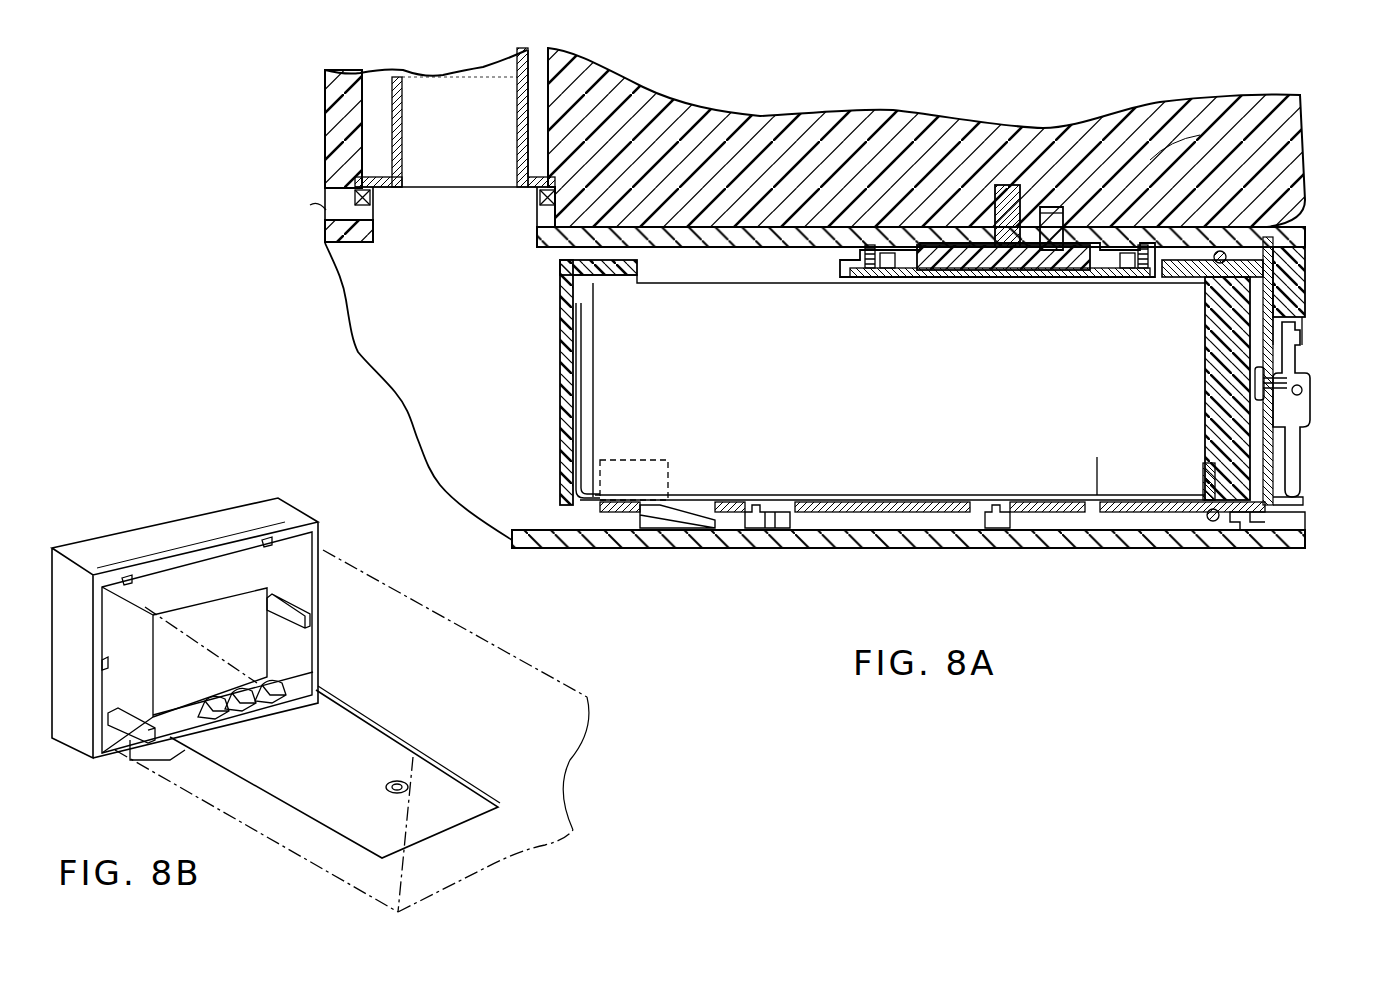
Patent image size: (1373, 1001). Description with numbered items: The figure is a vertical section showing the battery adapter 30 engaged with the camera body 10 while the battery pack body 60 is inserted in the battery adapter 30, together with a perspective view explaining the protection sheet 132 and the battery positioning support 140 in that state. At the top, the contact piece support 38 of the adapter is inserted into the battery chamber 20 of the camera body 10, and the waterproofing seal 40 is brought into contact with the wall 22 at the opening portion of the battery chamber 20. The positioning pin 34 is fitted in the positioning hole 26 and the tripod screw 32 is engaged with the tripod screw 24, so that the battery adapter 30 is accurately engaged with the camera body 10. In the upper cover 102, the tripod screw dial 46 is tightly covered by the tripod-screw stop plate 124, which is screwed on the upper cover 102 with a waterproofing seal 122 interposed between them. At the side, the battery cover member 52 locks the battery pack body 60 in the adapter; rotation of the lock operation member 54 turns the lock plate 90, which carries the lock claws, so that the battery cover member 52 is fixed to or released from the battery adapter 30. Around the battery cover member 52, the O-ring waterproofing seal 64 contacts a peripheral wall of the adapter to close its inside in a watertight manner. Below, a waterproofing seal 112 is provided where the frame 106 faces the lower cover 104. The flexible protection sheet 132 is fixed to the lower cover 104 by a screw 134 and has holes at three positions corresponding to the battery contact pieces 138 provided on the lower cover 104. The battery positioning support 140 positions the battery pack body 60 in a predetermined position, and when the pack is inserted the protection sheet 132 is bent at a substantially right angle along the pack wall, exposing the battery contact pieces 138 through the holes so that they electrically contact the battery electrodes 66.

In FIG. 8A, the camera body 10 is at (1300, 150).
In FIG. 8A, the battery chamber 20 is at (540, 100).
In FIG. 8A, the wall 22 is at (345, 210).
In FIG. 8A, the tripod screw 24 is at (1008, 192).
In FIG. 8A, the positioning hole 26 is at (1105, 236).
In FIG. 8A, the battery adapter 30 is at (708, 531).
In FIG. 8A, the tripod screw 32 is at (1048, 212).
In FIG. 8A, the positioning pin 34 is at (1108, 160).
In FIG. 8A, the contact piece support 38 is at (530, 62).
In FIG. 8A, the waterproofing seal 40 is at (612, 137).
In FIG. 8A, the tripod screw dial 46 is at (965, 272).
In FIG. 8A, the battery cover member 52 is at (1290, 262).
In FIG. 8A, the lock operation member 54 is at (1300, 410).
In FIG. 8A, the battery pack body 60 is at (1097, 458).
In FIG. 8B, the battery pack body 60 is at (540, 665).
In FIG. 8A, the waterproofing seal (O-ring) 64 is at (1213, 522).
In FIG. 8A, the battery electrodes 66 is at (566, 494).
In FIG. 8A, the lock plate 90 is at (1290, 350).
In FIG. 8A, the upper cover 102 is at (1306, 244).
In FIG. 8A, the lower cover 104 is at (1304, 540).
In FIG. 8A, the frame 106 is at (1270, 516).
In FIG. 8A, the waterproofing seal 112 is at (1236, 531).
In FIG. 8A, the waterproofing seal 122 is at (895, 245).
In FIG. 8A, the tripod-screw stop plate 124 is at (915, 279).
In FIG. 8A, the protection sheet 132 is at (578, 352).
In FIG. 8B, the protection sheet 132 is at (257, 595).
In FIG. 8B, the screw 134 is at (386, 787).
In FIG. 8A, the battery contact pieces 138 is at (641, 503).
In FIG. 8B, the battery contact pieces 138 is at (265, 692).
In FIG. 8A, the battery positioning support 140 is at (560, 290).
In FIG. 8B, the battery positioning support 140 is at (197, 532).